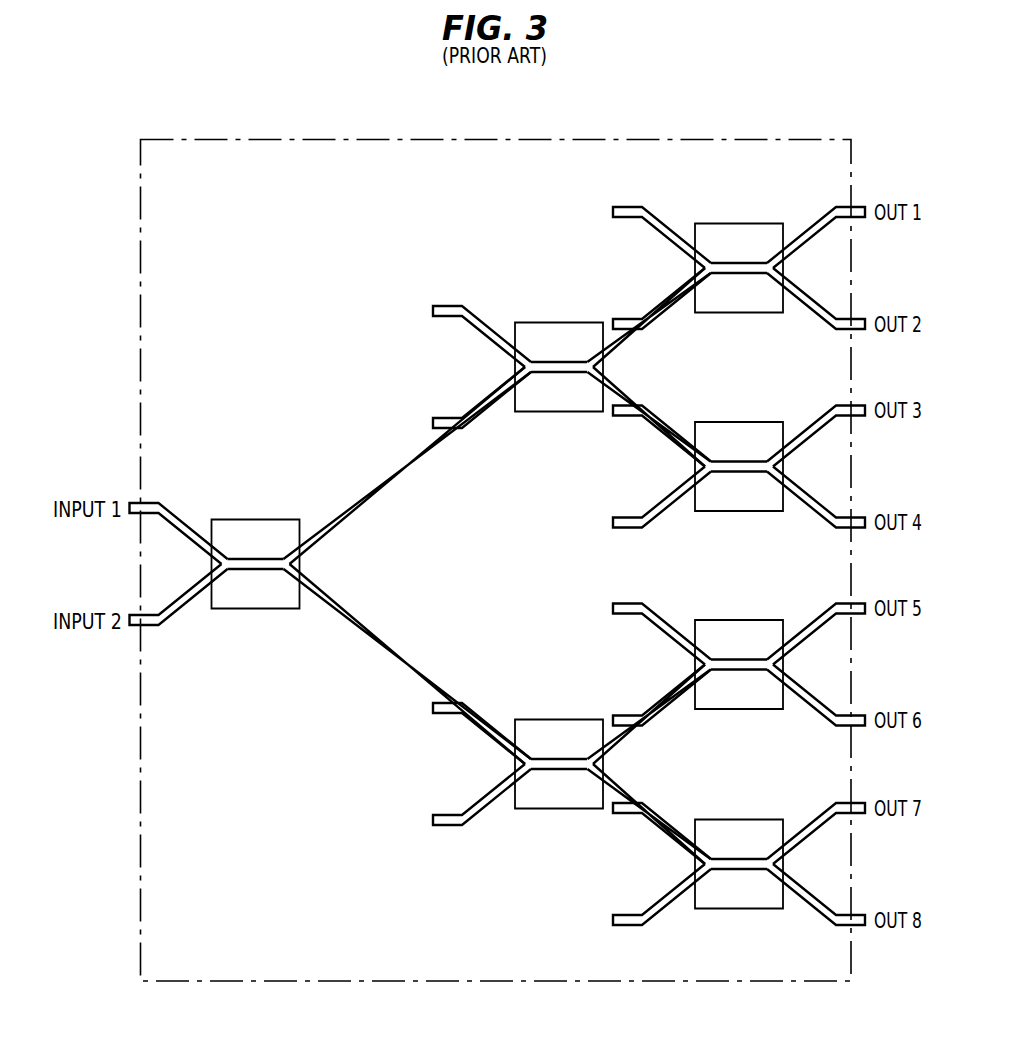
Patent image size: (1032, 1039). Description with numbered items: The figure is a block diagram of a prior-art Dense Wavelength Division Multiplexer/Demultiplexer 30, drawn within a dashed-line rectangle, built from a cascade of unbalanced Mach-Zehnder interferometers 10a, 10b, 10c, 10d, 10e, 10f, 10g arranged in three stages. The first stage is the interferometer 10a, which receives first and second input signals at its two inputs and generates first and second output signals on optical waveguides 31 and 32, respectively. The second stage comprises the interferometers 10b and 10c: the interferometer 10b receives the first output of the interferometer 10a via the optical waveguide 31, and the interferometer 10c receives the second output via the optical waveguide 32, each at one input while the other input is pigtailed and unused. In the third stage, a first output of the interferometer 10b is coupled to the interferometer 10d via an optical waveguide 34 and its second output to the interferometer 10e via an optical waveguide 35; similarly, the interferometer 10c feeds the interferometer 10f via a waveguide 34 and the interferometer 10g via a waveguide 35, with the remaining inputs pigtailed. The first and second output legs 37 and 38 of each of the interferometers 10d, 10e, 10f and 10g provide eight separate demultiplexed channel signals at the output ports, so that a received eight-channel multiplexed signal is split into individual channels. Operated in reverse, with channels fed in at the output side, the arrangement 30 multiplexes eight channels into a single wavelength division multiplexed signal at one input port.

The Dense Wavelength Division Multiplexer/Demultiplexer 30 is at (342, 138).
The Mach-Zehnder interferometer 10a is at (267, 519).
The Mach-Zehnder interferometer 10b is at (538, 322).
The Mach-Zehnder interferometer 10c is at (538, 719).
The Mach-Zehnder interferometer 10d is at (718, 223).
The Mach-Zehnder interferometer 10e is at (718, 422).
The Mach-Zehnder interferometer 10f is at (718, 620).
The Mach-Zehnder interferometer 10g is at (718, 819).
The optical waveguide 31 is at (418, 452).
The optical waveguide 32 is at (424, 692).
The optical waveguide 34 is at (655, 305).
The optical waveguide 35 is at (658, 432).
The optical waveguide 37 is at (818, 221).
The optical waveguide 38 is at (823, 320).